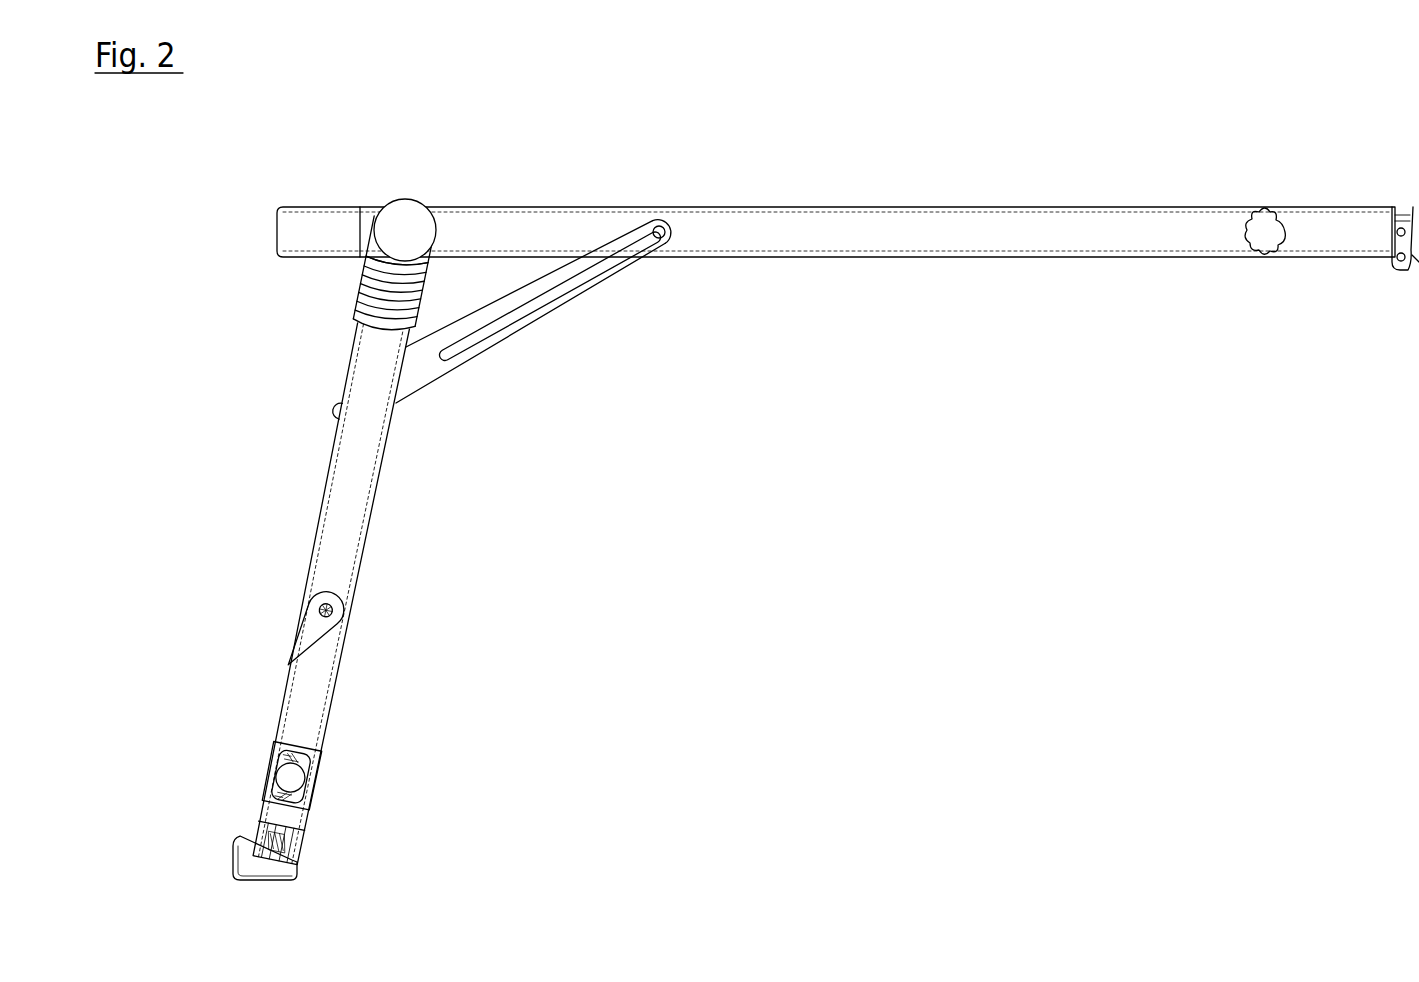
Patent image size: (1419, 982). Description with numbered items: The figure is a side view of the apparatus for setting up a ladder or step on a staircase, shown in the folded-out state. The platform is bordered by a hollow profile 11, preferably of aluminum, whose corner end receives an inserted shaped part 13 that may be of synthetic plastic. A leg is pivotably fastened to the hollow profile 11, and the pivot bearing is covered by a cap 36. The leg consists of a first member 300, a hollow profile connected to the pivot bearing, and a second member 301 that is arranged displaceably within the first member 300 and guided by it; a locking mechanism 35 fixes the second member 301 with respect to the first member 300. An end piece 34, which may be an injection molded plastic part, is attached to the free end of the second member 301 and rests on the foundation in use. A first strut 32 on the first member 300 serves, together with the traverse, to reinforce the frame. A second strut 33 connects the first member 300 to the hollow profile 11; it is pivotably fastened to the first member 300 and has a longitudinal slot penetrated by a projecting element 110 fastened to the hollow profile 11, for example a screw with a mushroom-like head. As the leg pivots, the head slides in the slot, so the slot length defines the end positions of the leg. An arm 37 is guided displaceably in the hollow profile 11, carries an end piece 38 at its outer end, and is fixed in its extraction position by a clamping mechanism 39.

The hollow profile 11 is at (895, 236).
The shaped part 13 is at (327, 228).
The first strut 32 is at (312, 621).
The second strut 33 is at (553, 313).
The end piece 34 is at (258, 856).
The locking mechanism 35 is at (291, 779).
The cap 36 is at (365, 284).
The arm 37 is at (1404, 215).
The end piece 38 is at (1416, 265).
The clamping mechanism 39 is at (1263, 232).
The projecting element 110 is at (657, 230).
The first member 300 is at (360, 496).
The second member 301 is at (290, 843).